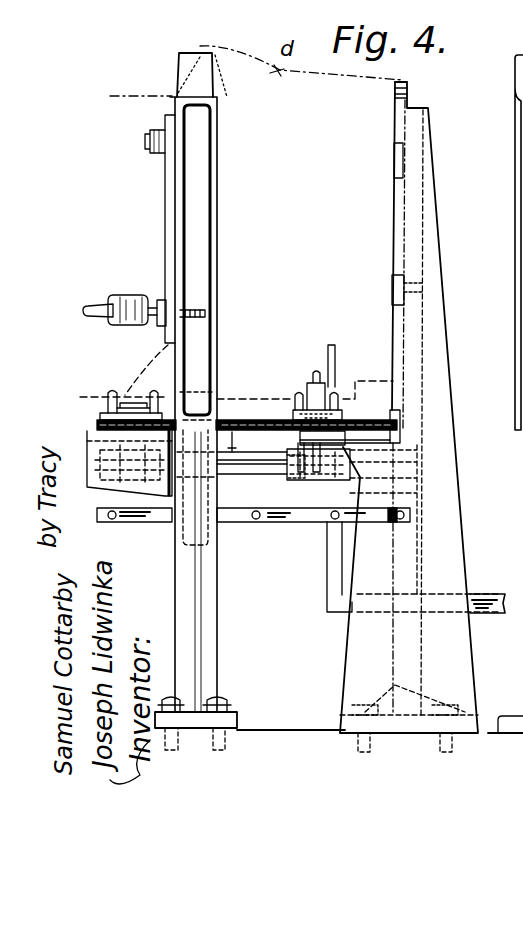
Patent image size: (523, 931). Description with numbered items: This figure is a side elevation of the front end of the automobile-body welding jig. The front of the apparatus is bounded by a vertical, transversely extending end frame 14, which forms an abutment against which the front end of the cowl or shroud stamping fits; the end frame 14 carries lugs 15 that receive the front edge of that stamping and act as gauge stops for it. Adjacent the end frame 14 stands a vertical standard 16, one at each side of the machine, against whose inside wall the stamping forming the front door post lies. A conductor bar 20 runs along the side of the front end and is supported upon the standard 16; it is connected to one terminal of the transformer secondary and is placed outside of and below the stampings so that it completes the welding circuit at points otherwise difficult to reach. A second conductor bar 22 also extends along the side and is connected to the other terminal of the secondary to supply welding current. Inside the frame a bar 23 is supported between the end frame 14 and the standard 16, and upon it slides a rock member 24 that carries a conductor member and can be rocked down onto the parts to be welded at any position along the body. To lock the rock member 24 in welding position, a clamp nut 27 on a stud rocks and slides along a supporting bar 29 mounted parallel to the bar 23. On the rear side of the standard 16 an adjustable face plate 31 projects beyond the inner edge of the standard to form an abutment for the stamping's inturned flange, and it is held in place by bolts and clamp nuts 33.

The end frame 14 is at (437, 292).
The lugs 15 is at (394, 170).
The standard 16 is at (205, 262).
The conductor bar 20 is at (290, 522).
The conductor bar 22 is at (260, 420).
The bar 23 is at (233, 476).
The rock member 24 is at (292, 470).
The clamp nut 27 is at (306, 380).
The supporting bar 29 is at (233, 418).
The face plate 31 is at (167, 207).
The bolts and clamp nuts 33 is at (150, 150).